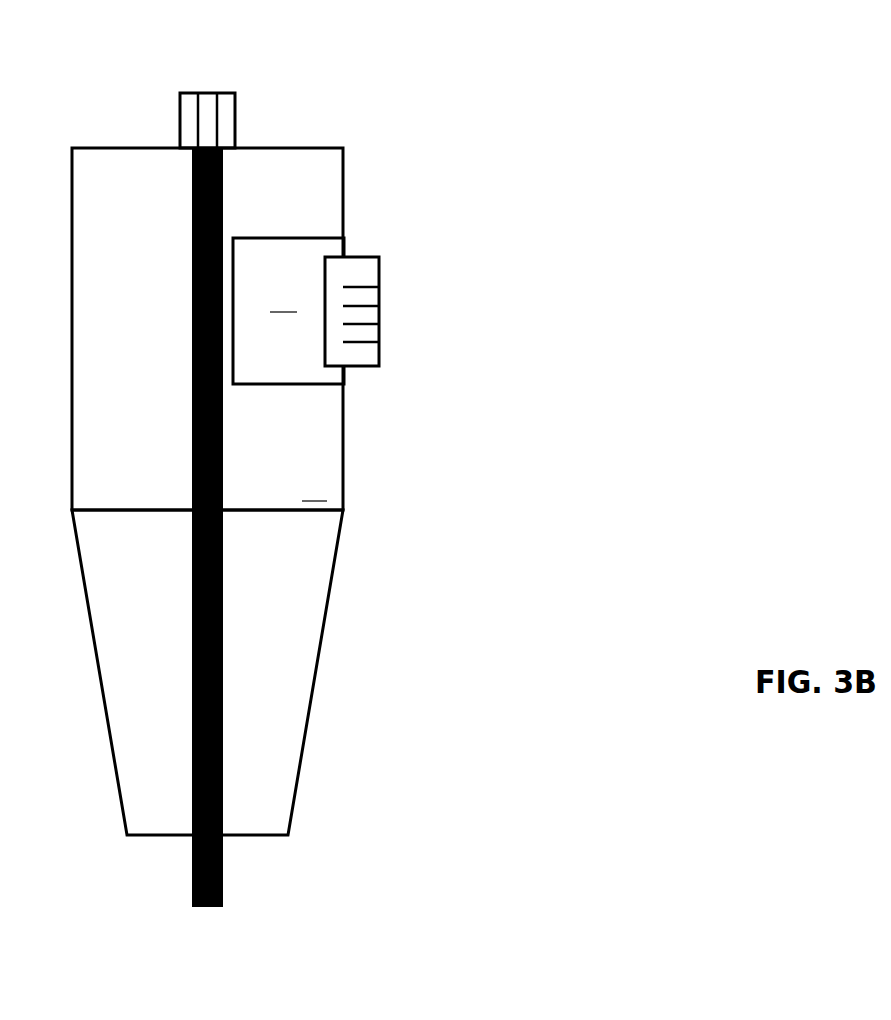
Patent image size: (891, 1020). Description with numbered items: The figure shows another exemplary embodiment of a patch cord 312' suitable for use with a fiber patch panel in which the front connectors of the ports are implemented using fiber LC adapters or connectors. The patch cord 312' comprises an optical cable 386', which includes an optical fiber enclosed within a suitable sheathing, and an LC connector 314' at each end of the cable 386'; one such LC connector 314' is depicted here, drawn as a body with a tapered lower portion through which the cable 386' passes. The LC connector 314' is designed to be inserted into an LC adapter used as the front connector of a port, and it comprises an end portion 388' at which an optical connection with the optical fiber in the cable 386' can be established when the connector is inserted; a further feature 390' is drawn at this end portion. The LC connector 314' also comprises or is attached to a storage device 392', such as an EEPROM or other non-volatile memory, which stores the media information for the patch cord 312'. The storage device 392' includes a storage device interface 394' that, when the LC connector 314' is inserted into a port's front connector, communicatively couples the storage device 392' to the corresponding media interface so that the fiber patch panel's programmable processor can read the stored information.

The patch cord 312' is at (295, 479).
The LC connector 314' is at (207, 491).
The optical cable 386' is at (257, 527).
The end portion 388' is at (152, 100).
The plug contact 390' is at (272, 120).
The storage device 392' is at (288, 311).
The storage device interface 394' is at (404, 288).